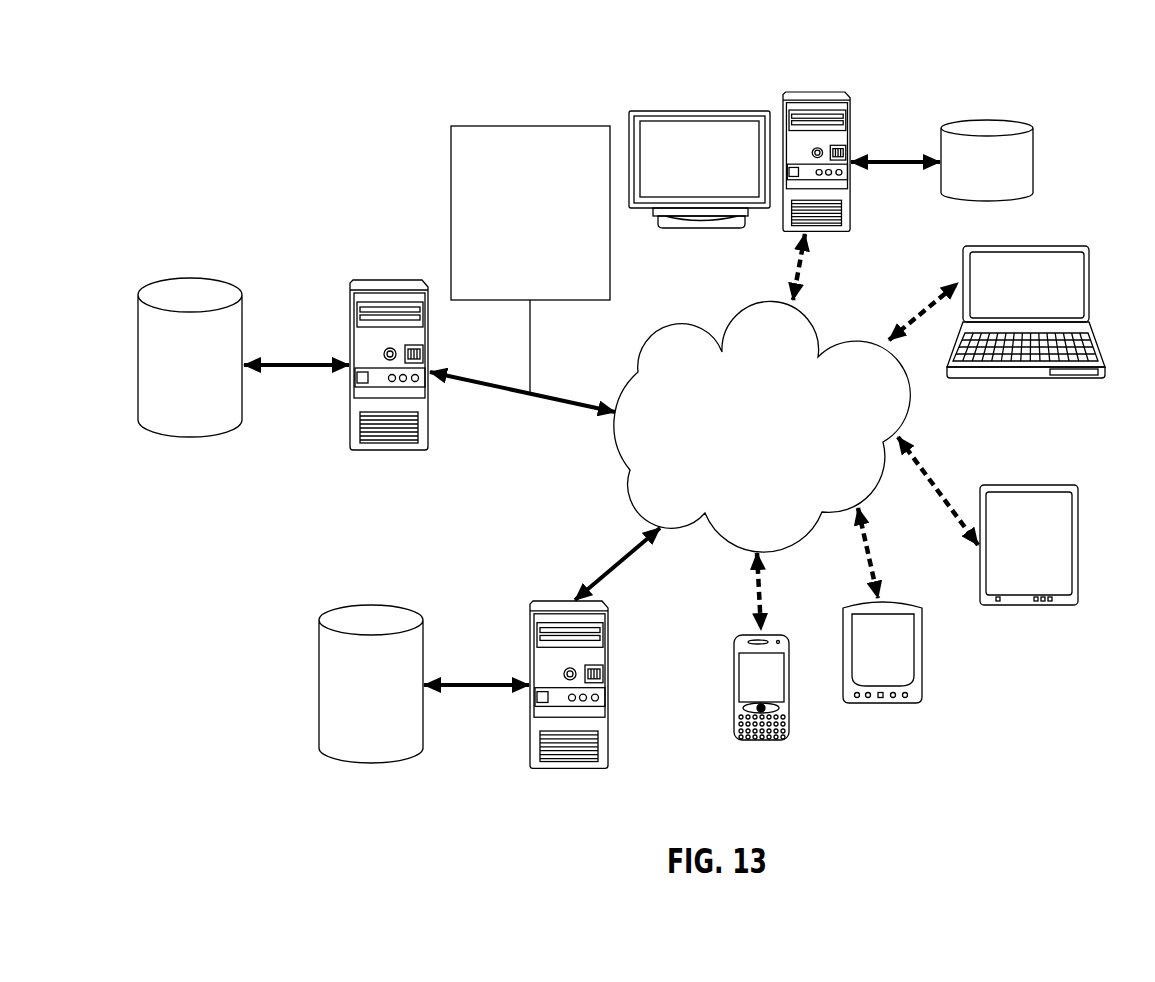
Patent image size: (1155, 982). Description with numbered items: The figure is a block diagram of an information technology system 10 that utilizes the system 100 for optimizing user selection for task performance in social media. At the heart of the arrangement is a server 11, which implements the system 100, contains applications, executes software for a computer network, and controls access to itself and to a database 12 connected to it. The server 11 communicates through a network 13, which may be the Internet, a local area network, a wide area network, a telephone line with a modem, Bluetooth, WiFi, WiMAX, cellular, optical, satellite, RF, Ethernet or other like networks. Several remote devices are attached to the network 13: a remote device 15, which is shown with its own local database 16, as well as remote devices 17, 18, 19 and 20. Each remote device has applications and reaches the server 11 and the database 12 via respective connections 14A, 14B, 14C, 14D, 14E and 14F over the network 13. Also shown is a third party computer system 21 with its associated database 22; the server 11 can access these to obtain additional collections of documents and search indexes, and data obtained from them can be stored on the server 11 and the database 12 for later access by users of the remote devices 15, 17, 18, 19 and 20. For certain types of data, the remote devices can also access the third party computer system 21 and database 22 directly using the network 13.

The information technology system 10 is at (722, 31).
The system for optimizing user selection for task performance 100 is at (513, 281).
The server 11 is at (388, 280).
The database 12 is at (199, 277).
The network 13 is at (680, 325).
The connection 14A is at (790, 268).
The connection 14B is at (918, 307).
The connection 14C is at (943, 483).
The connection 14D is at (870, 556).
The connection 14E is at (752, 596).
The connection 14F is at (612, 560).
The remote device 15 is at (813, 92).
The local database 16 is at (1033, 163).
The remote device 17 is at (1090, 283).
The remote device 18 is at (1060, 485).
The remote device 19 is at (923, 672).
The remote device 20 is at (733, 697).
The third party computer system 21 is at (609, 672).
The third party database 22 is at (371, 604).